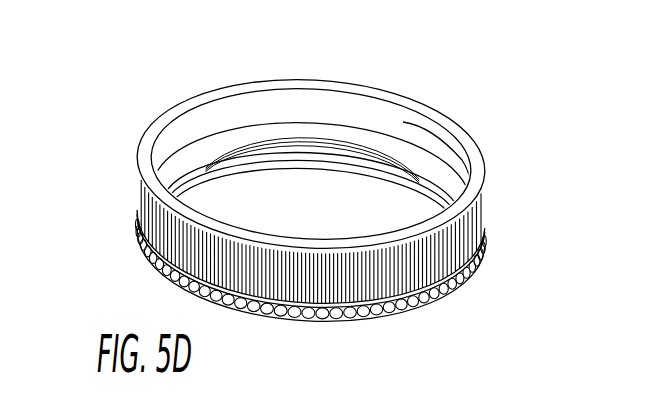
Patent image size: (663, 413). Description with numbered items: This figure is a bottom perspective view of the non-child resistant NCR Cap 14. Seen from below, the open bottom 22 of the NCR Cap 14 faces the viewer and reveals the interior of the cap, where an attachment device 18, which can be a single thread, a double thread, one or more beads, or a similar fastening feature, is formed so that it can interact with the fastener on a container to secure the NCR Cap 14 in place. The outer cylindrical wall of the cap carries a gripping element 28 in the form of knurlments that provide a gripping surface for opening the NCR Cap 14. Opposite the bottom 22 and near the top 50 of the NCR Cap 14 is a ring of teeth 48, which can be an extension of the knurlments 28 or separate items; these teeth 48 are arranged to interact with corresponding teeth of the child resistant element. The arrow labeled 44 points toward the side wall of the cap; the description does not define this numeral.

The NCR Cap 14 is at (92, 169).
The attachment device 18 is at (312, 122).
The bottom 22 is at (390, 94).
The gripping element 28 is at (142, 202).
The sidewall 44 is at (506, 212).
The teeth 48 is at (292, 319).
The top 50 is at (322, 224).